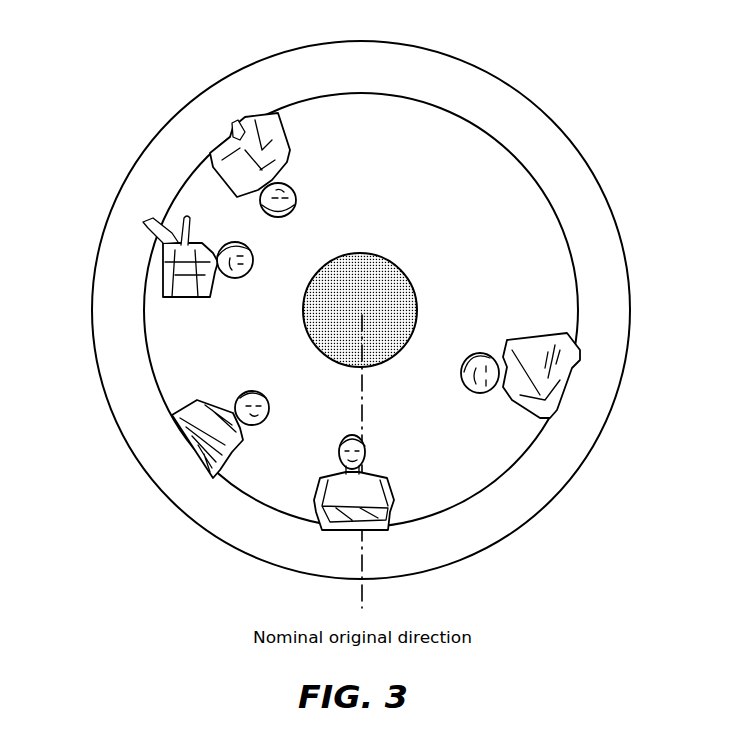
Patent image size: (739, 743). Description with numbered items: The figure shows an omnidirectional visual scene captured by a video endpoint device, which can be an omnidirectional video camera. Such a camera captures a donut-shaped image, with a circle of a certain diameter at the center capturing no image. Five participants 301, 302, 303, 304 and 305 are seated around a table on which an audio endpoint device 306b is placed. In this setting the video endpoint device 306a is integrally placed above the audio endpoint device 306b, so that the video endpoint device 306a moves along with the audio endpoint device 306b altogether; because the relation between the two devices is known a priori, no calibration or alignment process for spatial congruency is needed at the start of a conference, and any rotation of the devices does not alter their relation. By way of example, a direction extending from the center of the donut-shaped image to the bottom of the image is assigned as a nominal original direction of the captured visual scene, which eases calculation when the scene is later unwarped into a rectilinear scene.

The participant 301 is at (327, 487).
The participant 302 is at (568, 350).
The participant 303 is at (272, 115).
The participant 304 is at (170, 217).
The participant 305 is at (192, 407).
The video endpoint device 306a is at (387, 295).
The audio endpoint device 306b is at (400, 320).